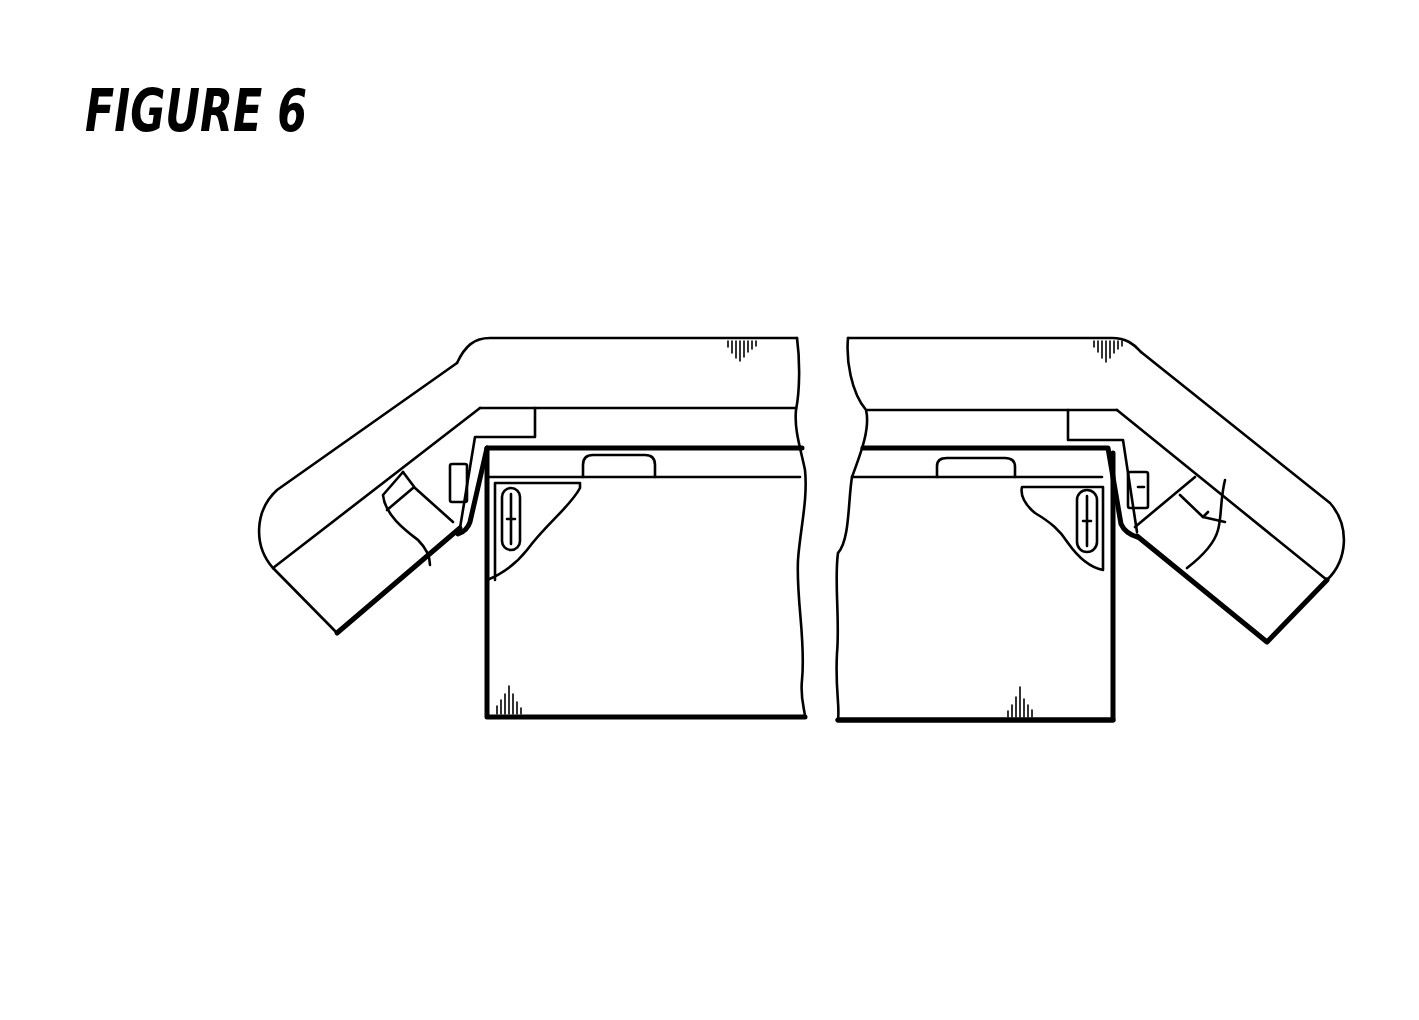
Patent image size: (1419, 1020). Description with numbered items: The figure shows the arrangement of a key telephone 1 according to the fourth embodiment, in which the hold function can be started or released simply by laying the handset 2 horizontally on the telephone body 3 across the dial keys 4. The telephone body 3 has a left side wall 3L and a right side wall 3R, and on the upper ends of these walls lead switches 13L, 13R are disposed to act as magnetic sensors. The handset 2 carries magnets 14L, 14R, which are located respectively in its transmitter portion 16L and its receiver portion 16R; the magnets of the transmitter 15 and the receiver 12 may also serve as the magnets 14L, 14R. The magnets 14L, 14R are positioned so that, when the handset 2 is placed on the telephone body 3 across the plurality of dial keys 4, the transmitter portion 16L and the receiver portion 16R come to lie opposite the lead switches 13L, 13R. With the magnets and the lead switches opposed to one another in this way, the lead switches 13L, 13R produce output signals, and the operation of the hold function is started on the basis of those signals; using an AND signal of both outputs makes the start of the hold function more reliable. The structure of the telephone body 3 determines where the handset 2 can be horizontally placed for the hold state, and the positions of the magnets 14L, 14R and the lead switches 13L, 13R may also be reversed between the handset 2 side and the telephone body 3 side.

The key telephone 1 is at (723, 240).
The handset 2 is at (917, 352).
The telephone body 3 is at (932, 724).
The left side wall 3L is at (487, 662).
The right side wall 3R is at (1116, 666).
The dial keys 4 is at (633, 463).
The receiver 12 is at (1225, 480).
The lead switch 13L is at (520, 550).
The lead switch 13R is at (1083, 553).
The magnet 14L is at (468, 477).
The magnet 14R is at (1141, 485).
The transmitter 15 is at (423, 519).
The transmitter portion 16L is at (335, 533).
The receiver portion 16R is at (1273, 565).